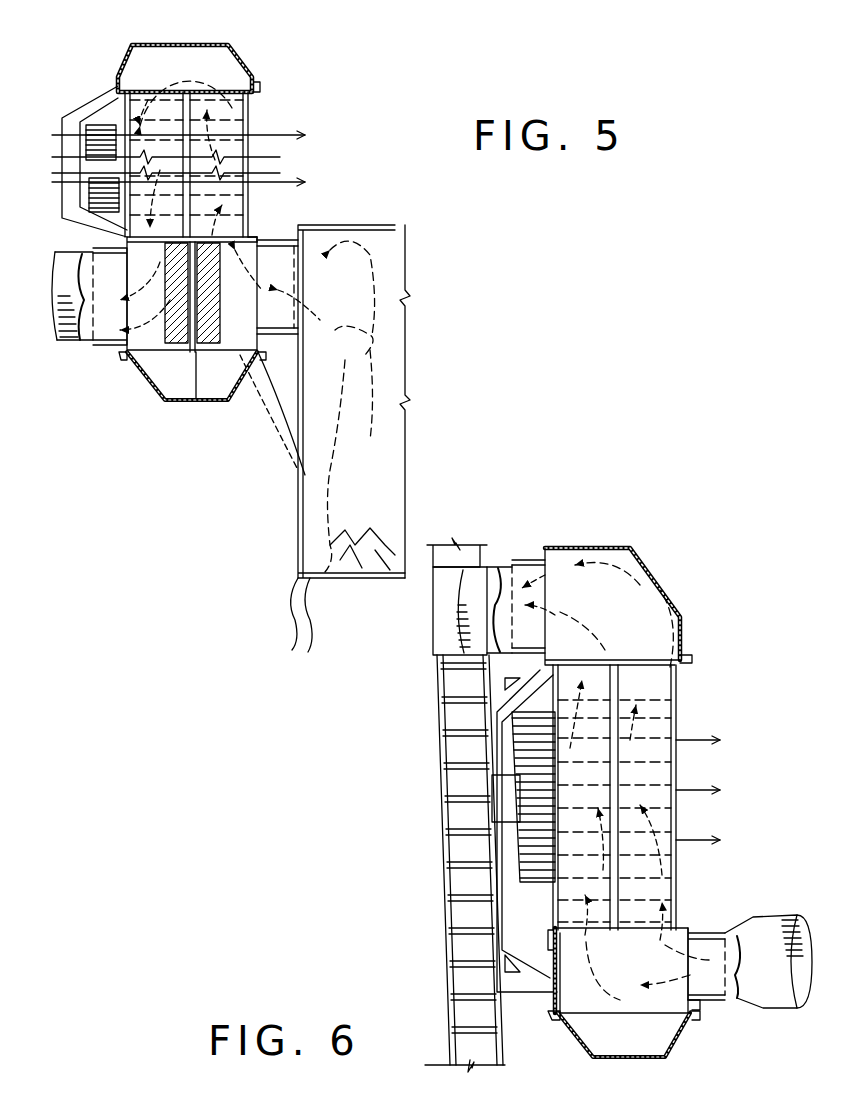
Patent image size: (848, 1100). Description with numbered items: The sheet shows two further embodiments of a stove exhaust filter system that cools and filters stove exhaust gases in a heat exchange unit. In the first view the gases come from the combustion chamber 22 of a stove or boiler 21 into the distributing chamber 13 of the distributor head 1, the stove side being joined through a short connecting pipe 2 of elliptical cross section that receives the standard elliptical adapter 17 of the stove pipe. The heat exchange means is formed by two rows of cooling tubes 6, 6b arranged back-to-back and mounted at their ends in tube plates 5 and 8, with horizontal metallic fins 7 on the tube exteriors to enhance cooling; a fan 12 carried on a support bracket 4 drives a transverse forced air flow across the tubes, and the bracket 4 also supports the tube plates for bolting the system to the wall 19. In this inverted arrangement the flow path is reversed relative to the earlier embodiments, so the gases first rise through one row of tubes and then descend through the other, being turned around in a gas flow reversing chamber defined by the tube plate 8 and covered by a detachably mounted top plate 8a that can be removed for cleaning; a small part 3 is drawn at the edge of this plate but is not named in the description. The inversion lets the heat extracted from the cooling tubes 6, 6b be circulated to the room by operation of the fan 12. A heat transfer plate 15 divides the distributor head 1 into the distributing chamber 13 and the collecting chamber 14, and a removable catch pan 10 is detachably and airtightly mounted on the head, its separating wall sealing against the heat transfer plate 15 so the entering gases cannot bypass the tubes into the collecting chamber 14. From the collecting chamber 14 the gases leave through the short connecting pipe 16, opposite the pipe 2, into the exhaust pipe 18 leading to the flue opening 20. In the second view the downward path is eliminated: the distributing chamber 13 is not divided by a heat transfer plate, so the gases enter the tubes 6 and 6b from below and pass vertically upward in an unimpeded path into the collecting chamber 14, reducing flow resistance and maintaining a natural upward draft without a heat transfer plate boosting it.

In FIG. 5, the distributor head 1 is at (252, 228).
In FIG. 5, the short connecting pipe 2 is at (298, 345).
In FIG. 6, the short connecting pipe 2 is at (710, 1005).
In FIG. 5, the flange 3 is at (258, 86).
In FIG. 6, the flange 3 is at (546, 944).
In FIG. 5, the support bracket 4 is at (64, 192).
In FIG. 6, the support bracket 4 is at (522, 688).
In FIG. 6, the tube plate 5 is at (690, 928).
In FIG. 5, the cooling tubes 6 is at (248, 106).
In FIG. 6, the cooling tubes 6 is at (676, 712).
In FIG. 5, the cooling tubes 6b is at (118, 112).
In FIG. 6, the cooling tubes 6b is at (610, 714).
In FIG. 5, the metallic fins 7 is at (252, 198).
In FIG. 6, the metallic fins 7 is at (678, 815).
In FIG. 5, the tube plate 8 is at (232, 46).
In FIG. 6, the tube plate 8 is at (693, 660).
In FIG. 5, the top plate 8a is at (210, 44).
In FIG. 5, the catch pan 10 is at (175, 402).
In FIG. 6, the catch pan 10 is at (602, 1060).
In FIG. 5, the fan 12 is at (86, 138).
In FIG. 6, the fan 12 is at (552, 884).
In FIG. 5, the distributing chamber 13 is at (250, 298).
In FIG. 6, the distributing chamber 13 is at (617, 1000).
In FIG. 5, the collecting chamber 14 is at (157, 298).
In FIG. 6, the collecting chamber 14 is at (610, 632).
In FIG. 5, the heat transfer plate 15 is at (178, 328).
In FIG. 5, the short connecting pipe 16 is at (108, 346).
In FIG. 6, the short connecting pipe 16 is at (525, 560).
In FIG. 6, the elliptical adapter 17 is at (760, 940).
In FIG. 5, the exhaust pipe 18 is at (76, 252).
In FIG. 6, the exhaust pipe 18 is at (486, 580).
In FIG. 6, the wall 19 is at (476, 722).
In FIG. 6, the flue opening 20 is at (460, 611).
In FIG. 5, the stove or boiler 21 is at (378, 224).
In FIG. 5, the combustion chamber 22 is at (356, 310).